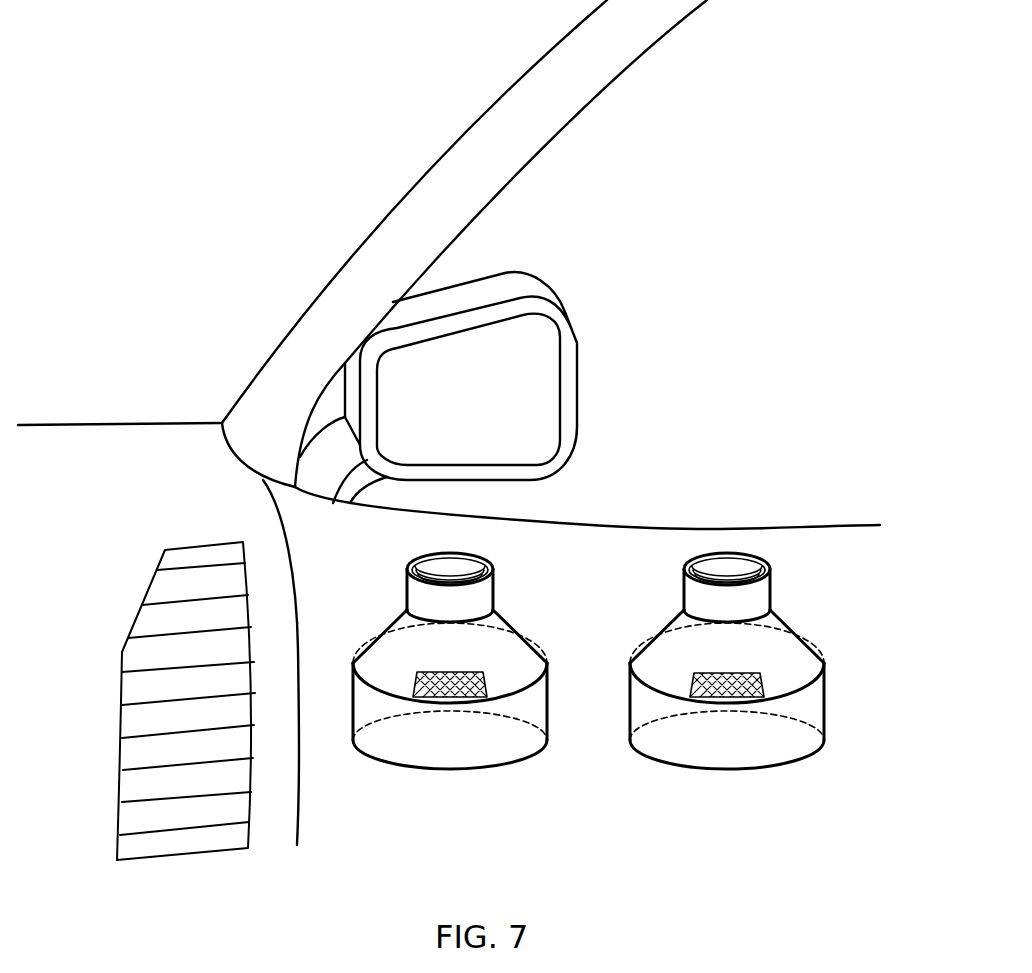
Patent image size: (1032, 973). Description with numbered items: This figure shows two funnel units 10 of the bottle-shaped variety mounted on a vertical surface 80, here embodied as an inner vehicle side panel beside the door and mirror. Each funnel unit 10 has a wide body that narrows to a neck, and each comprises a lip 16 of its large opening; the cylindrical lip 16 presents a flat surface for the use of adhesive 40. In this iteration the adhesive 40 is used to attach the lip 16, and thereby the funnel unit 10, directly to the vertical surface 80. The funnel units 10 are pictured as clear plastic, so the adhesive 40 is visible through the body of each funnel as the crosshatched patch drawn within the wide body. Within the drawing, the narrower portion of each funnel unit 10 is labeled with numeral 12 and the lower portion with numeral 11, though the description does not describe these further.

The vertical surface 80 is at (808, 552).
The lip 16 is at (646, 663).
The funnel unit 10 is at (785, 663).
The housing base cylinder 11 is at (785, 767).
The housing opening neck 12 is at (723, 563).
The adhesive 40 is at (450, 697).